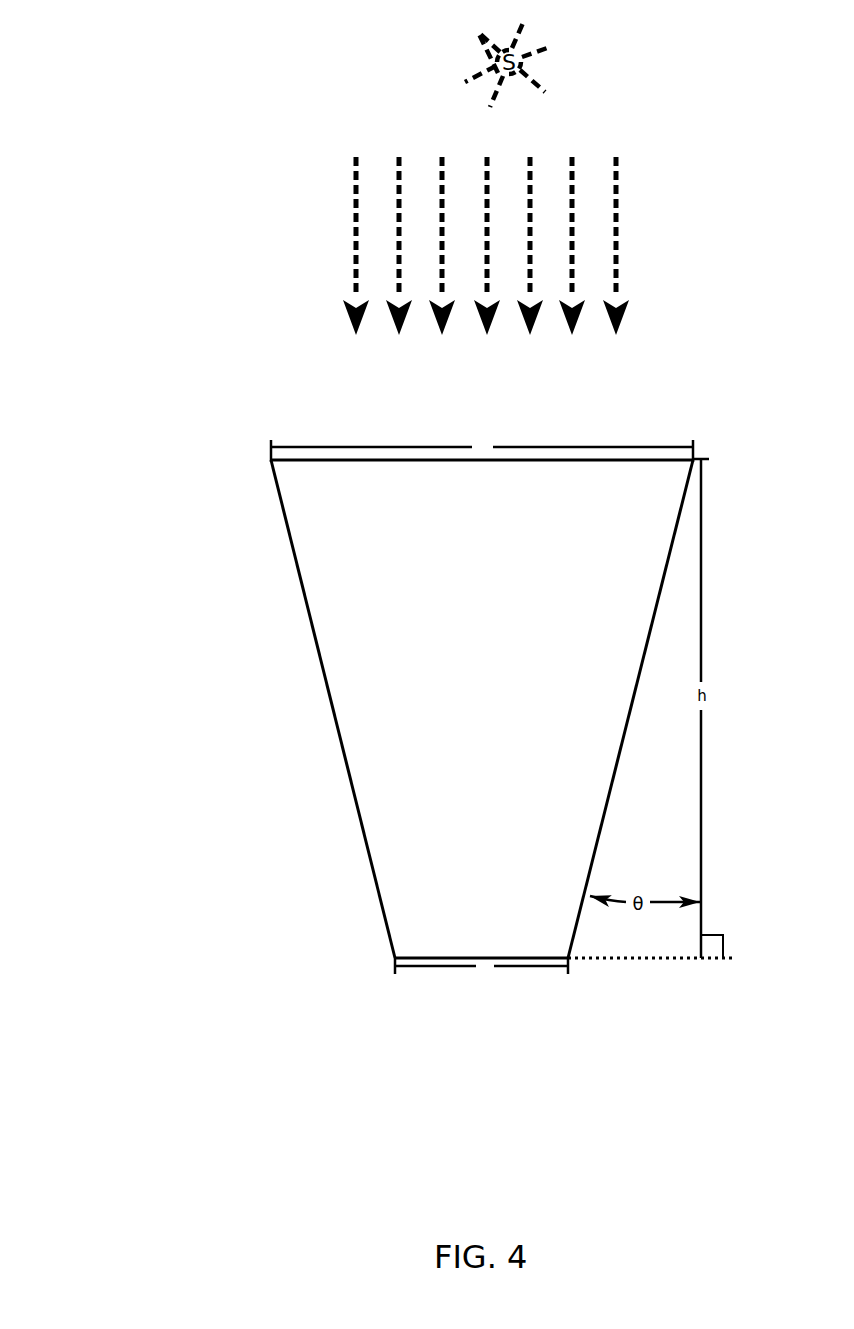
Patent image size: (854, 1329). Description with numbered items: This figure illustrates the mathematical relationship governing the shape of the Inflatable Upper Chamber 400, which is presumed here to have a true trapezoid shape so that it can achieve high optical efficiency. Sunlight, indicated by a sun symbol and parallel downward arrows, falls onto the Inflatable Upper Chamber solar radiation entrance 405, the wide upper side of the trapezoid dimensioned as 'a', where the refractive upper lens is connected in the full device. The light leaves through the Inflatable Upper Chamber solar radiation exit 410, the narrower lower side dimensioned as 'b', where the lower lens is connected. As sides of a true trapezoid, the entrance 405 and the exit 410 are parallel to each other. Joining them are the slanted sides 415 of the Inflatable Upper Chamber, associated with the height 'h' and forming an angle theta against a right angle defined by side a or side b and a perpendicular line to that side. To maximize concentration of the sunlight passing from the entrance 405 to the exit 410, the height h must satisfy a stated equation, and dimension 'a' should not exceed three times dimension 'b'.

The Inflatable Upper Chamber 400 is at (140, 107).
The Inflatable Upper Chamber solar radiation entrance 405 is at (345, 462).
The Inflatable Upper Chamber solar radiation exit 410 is at (452, 957).
The sides of the Inflatable Upper Chamber 415 is at (633, 700).